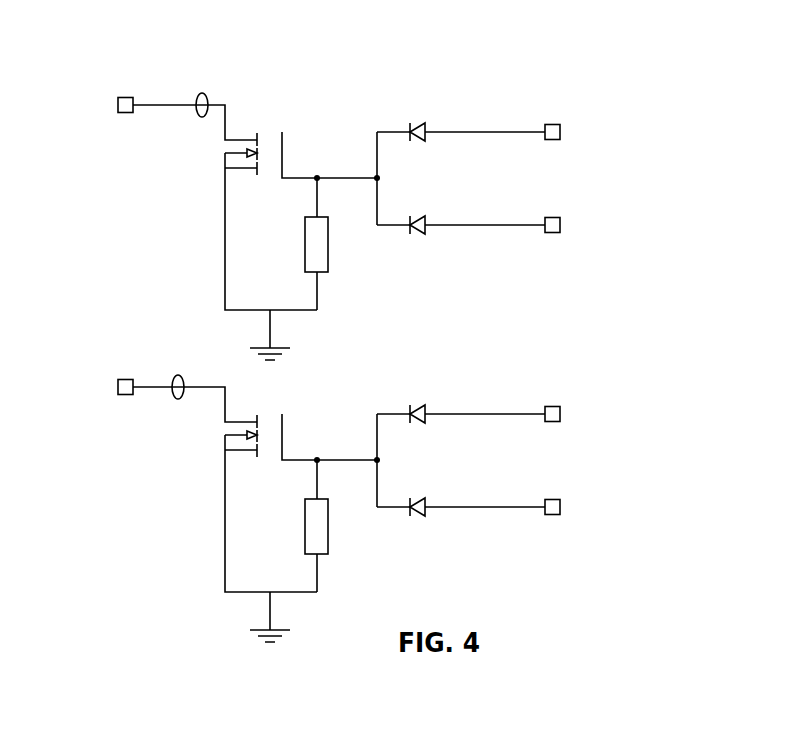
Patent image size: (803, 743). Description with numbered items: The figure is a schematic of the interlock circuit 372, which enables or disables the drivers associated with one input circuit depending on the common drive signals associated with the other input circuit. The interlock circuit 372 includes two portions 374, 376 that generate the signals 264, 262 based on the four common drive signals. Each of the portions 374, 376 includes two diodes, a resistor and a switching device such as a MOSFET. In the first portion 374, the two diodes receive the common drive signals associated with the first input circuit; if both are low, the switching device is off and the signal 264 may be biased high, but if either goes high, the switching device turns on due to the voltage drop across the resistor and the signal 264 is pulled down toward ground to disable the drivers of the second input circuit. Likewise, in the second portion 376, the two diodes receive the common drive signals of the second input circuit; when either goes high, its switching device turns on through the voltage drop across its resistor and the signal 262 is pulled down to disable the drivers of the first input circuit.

The interlock circuit 372 is at (540, 46).
The portion 374 is at (370, 96).
The portion 376 is at (383, 368).
The signal 264 is at (203, 88).
The signal 262 is at (179, 370).